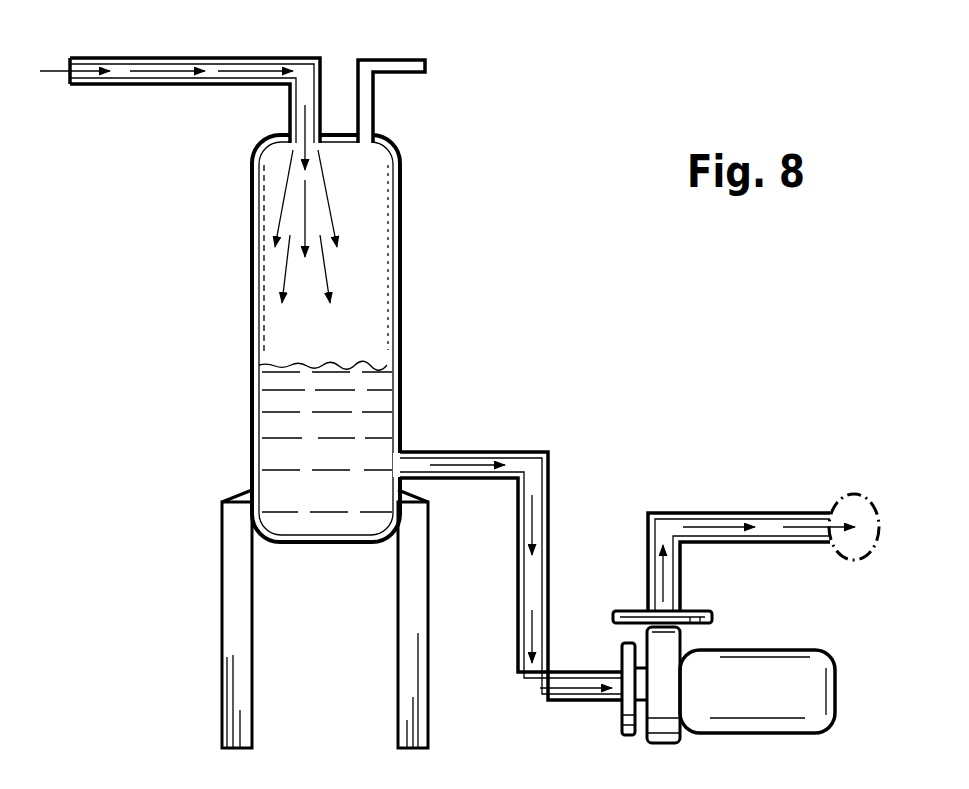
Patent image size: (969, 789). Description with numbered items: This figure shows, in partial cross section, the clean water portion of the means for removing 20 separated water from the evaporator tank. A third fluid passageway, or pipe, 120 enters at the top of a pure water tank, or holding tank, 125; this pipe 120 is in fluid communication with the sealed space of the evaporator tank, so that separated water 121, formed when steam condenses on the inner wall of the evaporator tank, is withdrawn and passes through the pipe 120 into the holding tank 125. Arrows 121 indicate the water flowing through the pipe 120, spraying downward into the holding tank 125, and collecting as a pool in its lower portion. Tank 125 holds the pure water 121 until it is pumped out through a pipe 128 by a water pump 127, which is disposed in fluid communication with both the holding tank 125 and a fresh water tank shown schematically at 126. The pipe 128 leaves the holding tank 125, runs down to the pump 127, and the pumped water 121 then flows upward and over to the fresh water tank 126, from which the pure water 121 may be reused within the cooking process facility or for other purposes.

The means for removing separated water 20 is at (420, 124).
The third fluid passageway 120 is at (205, 57).
The separated water 121 is at (231, 77).
The pure water tank 125 is at (400, 307).
The fresh water tank 126 is at (850, 495).
The water pump 127 is at (758, 650).
The pipe 128 is at (549, 530).